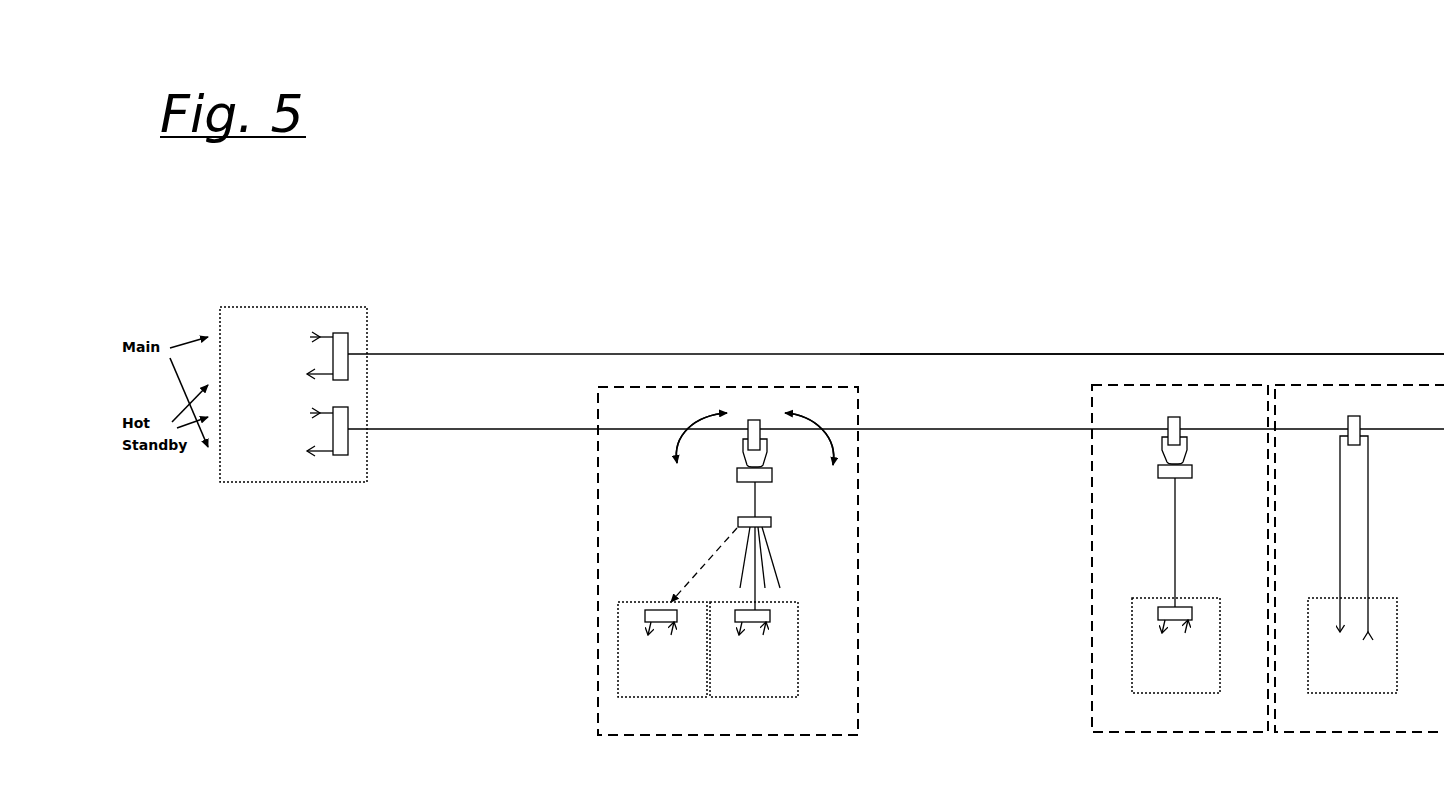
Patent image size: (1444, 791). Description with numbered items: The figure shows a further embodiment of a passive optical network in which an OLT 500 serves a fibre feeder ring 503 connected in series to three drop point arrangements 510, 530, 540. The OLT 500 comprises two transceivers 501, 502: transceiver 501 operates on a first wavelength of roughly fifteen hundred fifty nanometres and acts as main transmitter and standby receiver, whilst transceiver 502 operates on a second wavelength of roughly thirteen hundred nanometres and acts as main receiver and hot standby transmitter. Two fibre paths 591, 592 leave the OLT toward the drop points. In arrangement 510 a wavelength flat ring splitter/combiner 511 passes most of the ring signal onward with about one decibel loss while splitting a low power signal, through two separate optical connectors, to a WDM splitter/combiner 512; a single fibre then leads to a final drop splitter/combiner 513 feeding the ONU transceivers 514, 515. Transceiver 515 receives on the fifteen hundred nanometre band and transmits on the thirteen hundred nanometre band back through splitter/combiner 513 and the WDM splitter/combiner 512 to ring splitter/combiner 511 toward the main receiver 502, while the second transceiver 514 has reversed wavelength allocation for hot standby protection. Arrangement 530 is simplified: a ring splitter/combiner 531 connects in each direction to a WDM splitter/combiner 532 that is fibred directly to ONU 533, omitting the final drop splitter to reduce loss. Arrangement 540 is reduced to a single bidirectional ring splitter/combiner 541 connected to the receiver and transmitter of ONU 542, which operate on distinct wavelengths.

The OLT 500 is at (293, 398).
The transceiver 501 is at (340, 347).
The transceiver 502 is at (340, 444).
The fibre feeder ring 503 is at (1152, 343).
The main fiber link 591 is at (537, 358).
The standby fiber link 592 is at (537, 425).
The drop point arrangement 510 is at (728, 574).
The wavelength flat ring splitter/combiner 511 is at (752, 435).
The WDM splitter/combiner 512 is at (754, 492).
The final drop splitter/combiner 513 is at (742, 563).
The second transceiver 514 is at (662, 661).
The transceiver 515 is at (754, 661).
The drop point arrangement 530 is at (1180, 569).
The wavelength flat ring splitter/combiner 531 is at (1175, 430).
The WDM splitter/combiner 532 is at (1174, 534).
The ONU 533 is at (1176, 658).
The drop point arrangement 540 is at (1359, 569).
The wavelength flat bidirectional ring splitter/combiner 541 is at (1355, 517).
The ONU 542 is at (1352, 658).